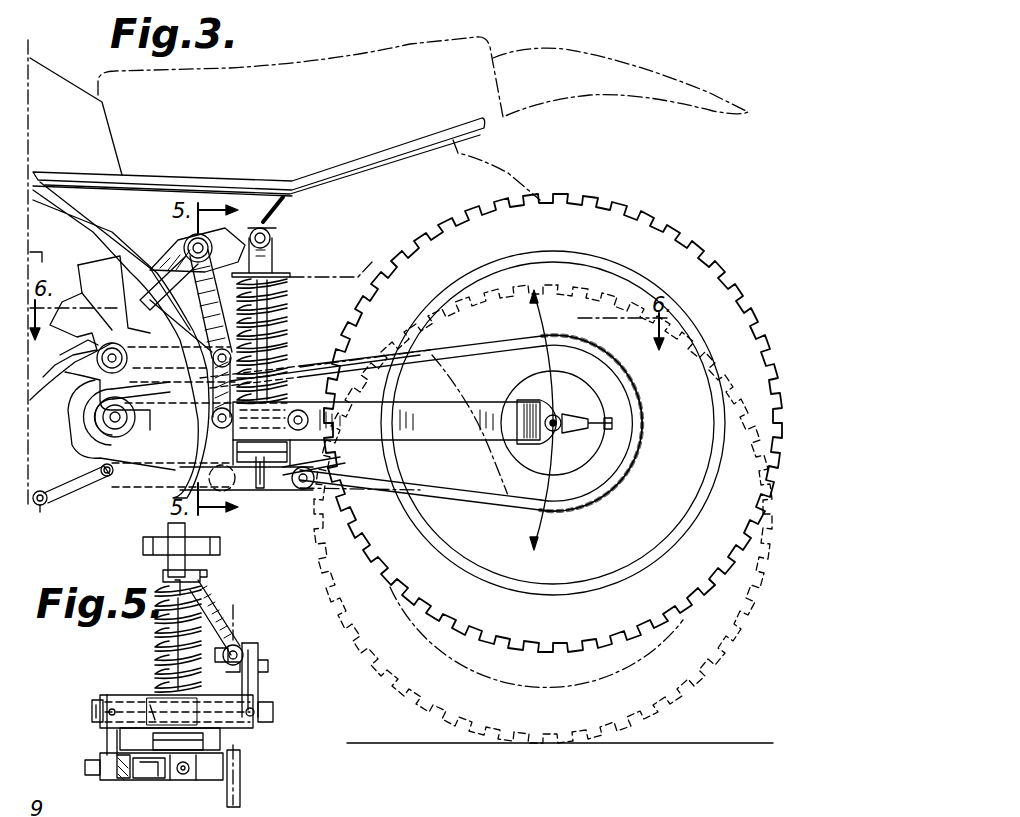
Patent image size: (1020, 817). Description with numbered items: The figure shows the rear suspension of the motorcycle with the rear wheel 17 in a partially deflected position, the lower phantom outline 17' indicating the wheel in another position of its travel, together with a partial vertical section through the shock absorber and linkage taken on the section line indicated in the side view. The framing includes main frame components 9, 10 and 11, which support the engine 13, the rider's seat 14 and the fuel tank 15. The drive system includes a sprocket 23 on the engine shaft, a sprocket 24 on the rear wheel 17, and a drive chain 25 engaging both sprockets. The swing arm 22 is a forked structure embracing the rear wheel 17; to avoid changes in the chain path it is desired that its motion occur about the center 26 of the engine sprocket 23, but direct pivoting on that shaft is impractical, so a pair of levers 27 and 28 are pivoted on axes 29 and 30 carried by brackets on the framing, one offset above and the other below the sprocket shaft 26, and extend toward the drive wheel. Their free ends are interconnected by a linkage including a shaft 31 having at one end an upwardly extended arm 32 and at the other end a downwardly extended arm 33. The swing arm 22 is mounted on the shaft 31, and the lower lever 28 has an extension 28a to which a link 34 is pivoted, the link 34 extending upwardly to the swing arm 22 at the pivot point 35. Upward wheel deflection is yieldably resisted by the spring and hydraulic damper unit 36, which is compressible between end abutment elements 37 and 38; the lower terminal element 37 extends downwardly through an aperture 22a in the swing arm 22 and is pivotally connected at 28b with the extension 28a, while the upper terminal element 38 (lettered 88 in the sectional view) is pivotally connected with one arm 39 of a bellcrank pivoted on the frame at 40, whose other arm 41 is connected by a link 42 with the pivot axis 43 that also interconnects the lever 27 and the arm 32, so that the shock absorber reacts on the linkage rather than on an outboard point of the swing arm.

In FIG. 3, the main frame component 9 is at (45, 509).
In FIG. 3, the main frame component 10 is at (84, 232).
In FIG. 3, the main frame component 11 is at (148, 180).
In FIG. 3, the engine 13 is at (62, 396).
In FIG. 3, the rider's seat 14 is at (272, 72).
In FIG. 3, the fuel tank 15 is at (60, 72).
In FIG. 3, the rear wheel 17 is at (553, 423).
In FIG. 3, the rear wheel in lower position 17' is at (543, 514).
In FIG. 3, the swing arm 22 is at (438, 437).
In FIG. 5, the swing arm 22 is at (120, 695).
In FIG. 5, the aperture 22a is at (150, 705).
In FIG. 3, the sprocket 23 is at (100, 415).
In FIG. 3, the sprocket 24 is at (497, 382).
In FIG. 3, the drive chain 25 is at (468, 337).
In FIG. 5, the drive chain 25 is at (236, 625).
In FIG. 3, the center of the engine sprocket 26 is at (100, 433).
In FIG. 3, the lever 27 is at (188, 313).
In FIG. 5, the lever 27 is at (290, 629).
In FIG. 3, the lever 28 is at (150, 495).
In FIG. 5, the lever 28 is at (100, 770).
In FIG. 3, the extension 28a is at (303, 490).
In FIG. 5, the extension 28a is at (148, 780).
In FIG. 5, the pivotal connection 28b is at (183, 775).
In FIG. 3, the axis 29 is at (112, 348).
In FIG. 3, the axis 30 is at (90, 495).
In FIG. 3, the shaft 31 is at (302, 410).
In FIG. 5, the shaft 31 is at (92, 710).
In FIG. 3, the upwardly extended arm 32 is at (240, 372).
In FIG. 5, the upwardly extended arm 32 is at (294, 691).
In FIG. 3, the downwardly extended arm 33 is at (205, 425).
In FIG. 5, the downwardly extended arm 33 is at (108, 740).
In FIG. 3, the link 34 is at (350, 458).
In FIG. 3, the pivot point 35 is at (345, 378).
In FIG. 3, the spring and hydraulic damper unit 36 is at (292, 316).
In FIG. 5, the spring and hydraulic damper unit 36 is at (145, 640).
In FIG. 3, the lower terminal element 37 is at (262, 490).
In FIG. 5, the lower terminal element 37 is at (205, 748).
In FIG. 3, the upper terminal element 38 is at (287, 267).
In FIG. 5, the shock absorber body 88 is at (165, 575).
In FIG. 3, the bellcrank arm 39 is at (238, 233).
In FIG. 3, the bellcrank pivot 40 is at (200, 235).
In FIG. 5, the bellcrank pivot 40 is at (165, 546).
In FIG. 3, the bellcrank arm 41 is at (157, 257).
In FIG. 5, the bellcrank arm 41 is at (185, 555).
In FIG. 3, the link 42 is at (197, 280).
In FIG. 5, the link 42 is at (218, 612).
In FIG. 3, the pivot axis 43 is at (222, 349).
In FIG. 5, the pivot axis 43 is at (308, 664).